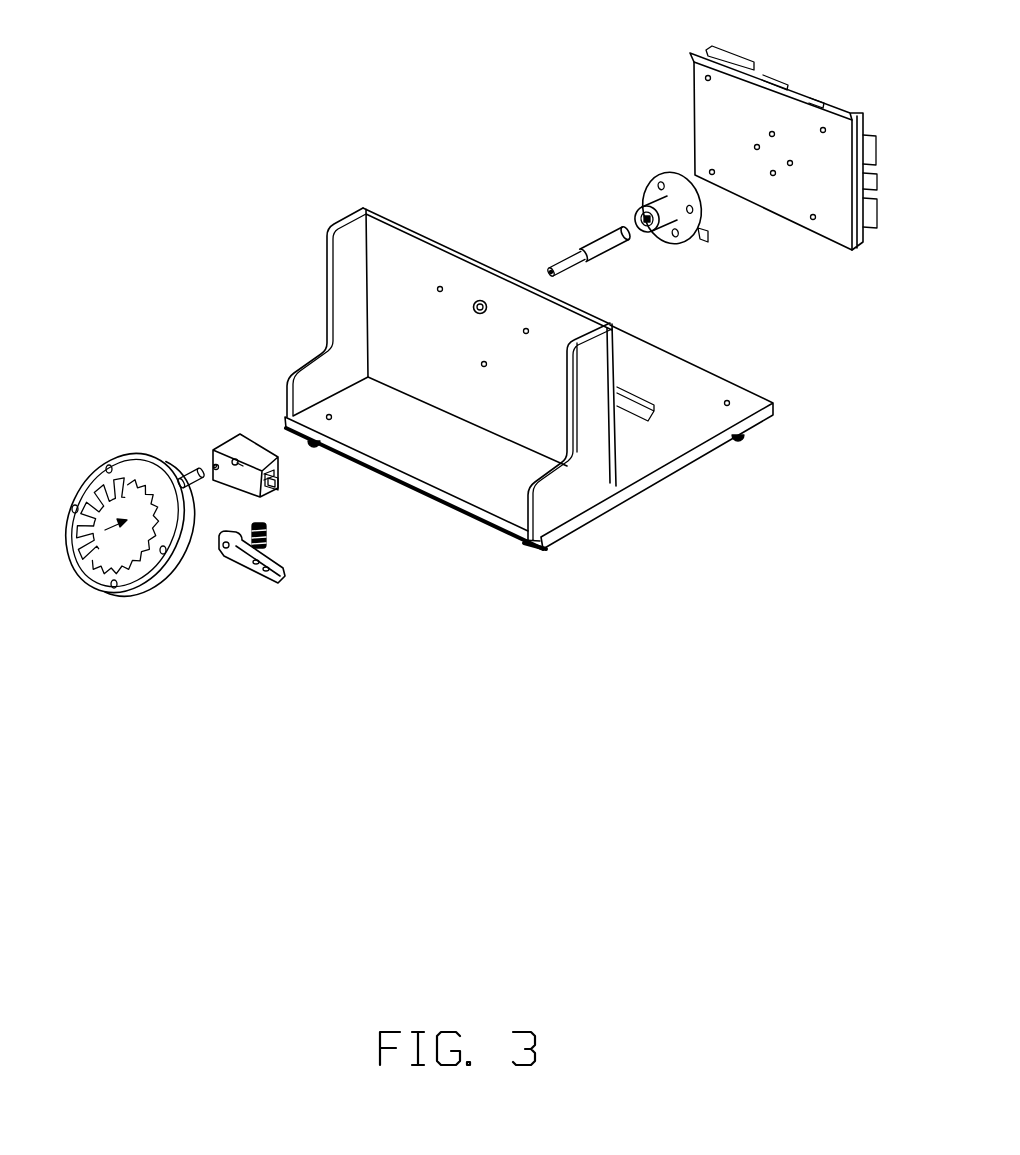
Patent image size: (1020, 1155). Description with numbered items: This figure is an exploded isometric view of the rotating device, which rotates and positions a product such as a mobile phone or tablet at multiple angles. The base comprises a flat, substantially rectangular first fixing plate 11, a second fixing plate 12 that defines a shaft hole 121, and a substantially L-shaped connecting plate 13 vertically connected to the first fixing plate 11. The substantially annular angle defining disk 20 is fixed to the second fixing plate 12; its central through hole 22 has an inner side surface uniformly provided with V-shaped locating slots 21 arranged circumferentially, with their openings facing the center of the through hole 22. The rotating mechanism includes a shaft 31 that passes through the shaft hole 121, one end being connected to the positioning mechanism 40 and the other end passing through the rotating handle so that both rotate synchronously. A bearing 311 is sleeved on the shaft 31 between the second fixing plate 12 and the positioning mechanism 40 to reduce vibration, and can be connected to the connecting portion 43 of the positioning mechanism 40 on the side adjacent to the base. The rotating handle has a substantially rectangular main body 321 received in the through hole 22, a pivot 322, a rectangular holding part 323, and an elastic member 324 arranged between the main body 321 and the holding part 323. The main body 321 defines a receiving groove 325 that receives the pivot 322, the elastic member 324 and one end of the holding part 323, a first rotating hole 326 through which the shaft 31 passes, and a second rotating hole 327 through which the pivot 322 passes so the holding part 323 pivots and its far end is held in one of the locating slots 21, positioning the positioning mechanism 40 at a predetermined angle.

The first fixing plate 11 is at (480, 470).
The second fixing plate 12 is at (449, 275).
The shaft hole 121 is at (476, 300).
The connecting plate 13 is at (592, 477).
The angle defining disk 20 is at (118, 508).
The locating slots 21 is at (112, 575).
The through hole 22 is at (100, 543).
The shaft 31 is at (598, 243).
The bearing 311 is at (655, 215).
The main body 321 is at (262, 434).
The pivot 322 is at (183, 470).
The holding part 323 is at (235, 565).
The elastic member 324 is at (270, 540).
The receiving groove 325 is at (270, 488).
The first rotating hole 326 is at (280, 466).
The second rotating hole 327 is at (213, 462).
The positioning mechanism 40 is at (738, 60).
The connecting portion 43 is at (693, 201).